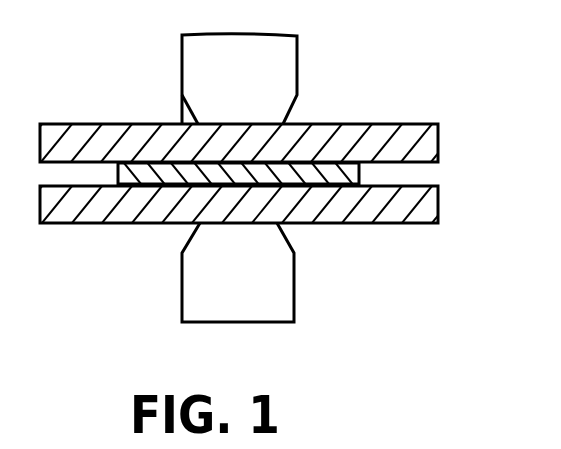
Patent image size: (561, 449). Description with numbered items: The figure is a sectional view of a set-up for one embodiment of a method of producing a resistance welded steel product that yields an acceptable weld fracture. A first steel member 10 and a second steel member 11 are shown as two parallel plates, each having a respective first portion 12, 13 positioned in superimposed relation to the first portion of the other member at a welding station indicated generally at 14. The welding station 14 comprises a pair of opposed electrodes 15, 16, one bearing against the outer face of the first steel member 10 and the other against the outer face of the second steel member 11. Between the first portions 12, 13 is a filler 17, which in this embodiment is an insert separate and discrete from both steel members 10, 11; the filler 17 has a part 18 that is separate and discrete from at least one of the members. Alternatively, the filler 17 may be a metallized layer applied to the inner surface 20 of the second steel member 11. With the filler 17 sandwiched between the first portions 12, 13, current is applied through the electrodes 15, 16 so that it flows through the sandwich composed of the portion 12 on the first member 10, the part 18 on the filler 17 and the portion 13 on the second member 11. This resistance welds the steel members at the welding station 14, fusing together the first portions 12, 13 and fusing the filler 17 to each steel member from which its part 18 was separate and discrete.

The first steel member 10 is at (417, 140).
The second steel member 11 is at (428, 207).
The first portion of first steel member 12 is at (242, 146).
The first portion of second steel member 13 is at (246, 201).
The welding station 14 is at (311, 77).
The electrode 15 is at (194, 65).
The electrode 16 is at (186, 275).
The filler 17 is at (347, 180).
The part of filler 18 is at (285, 175).
The inner surface of steel member 20 is at (150, 183).